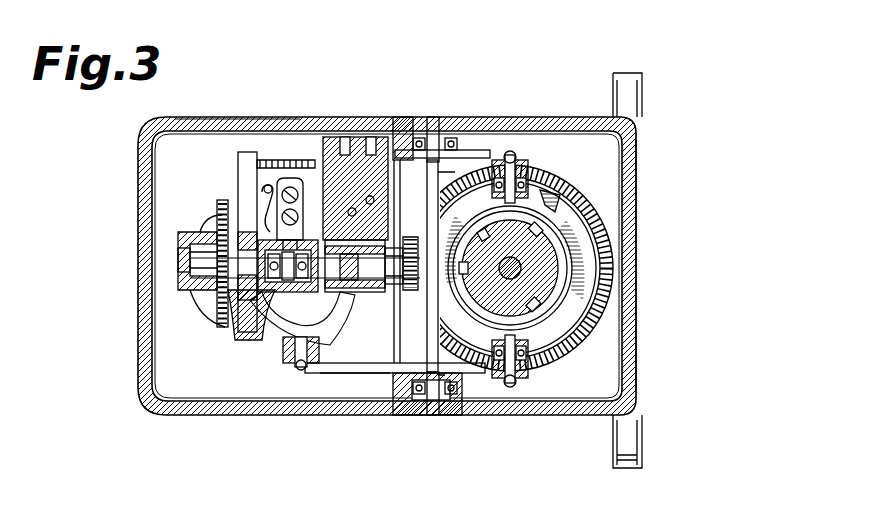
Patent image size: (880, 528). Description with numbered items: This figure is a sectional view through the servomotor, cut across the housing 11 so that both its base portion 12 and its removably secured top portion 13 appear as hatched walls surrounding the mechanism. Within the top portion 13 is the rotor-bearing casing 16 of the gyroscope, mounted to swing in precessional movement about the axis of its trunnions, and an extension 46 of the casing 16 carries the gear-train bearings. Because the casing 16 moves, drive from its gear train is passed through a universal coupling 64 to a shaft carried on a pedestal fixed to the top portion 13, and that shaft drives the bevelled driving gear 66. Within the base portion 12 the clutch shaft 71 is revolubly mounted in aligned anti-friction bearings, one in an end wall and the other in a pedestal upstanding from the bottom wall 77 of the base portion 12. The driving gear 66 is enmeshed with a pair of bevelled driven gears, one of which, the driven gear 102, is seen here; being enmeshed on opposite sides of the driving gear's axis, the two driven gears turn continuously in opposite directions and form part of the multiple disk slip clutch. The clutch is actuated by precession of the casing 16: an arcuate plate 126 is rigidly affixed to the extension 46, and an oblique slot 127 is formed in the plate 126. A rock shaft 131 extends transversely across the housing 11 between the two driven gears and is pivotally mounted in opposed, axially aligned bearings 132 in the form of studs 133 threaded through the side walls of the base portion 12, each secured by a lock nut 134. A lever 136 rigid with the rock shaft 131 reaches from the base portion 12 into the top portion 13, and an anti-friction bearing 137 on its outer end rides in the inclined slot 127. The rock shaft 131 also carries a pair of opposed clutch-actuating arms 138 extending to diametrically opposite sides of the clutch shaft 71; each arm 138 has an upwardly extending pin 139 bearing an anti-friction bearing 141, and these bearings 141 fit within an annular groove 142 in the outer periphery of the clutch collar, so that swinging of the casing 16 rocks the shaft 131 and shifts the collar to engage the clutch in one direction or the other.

The housing 11 is at (272, 117).
The base portion 12 is at (628, 150).
The top portion 13 is at (213, 117).
The rotor-bearing casing 16 is at (205, 328).
The extension 46 is at (228, 342).
The universal coupling 64 is at (305, 284).
The driving gear 66 is at (408, 293).
The clutch shaft 71 is at (522, 258).
The bottom wall 77 is at (630, 218).
The bevelled driven gear 102 is at (560, 205).
The arcuate plate 126 is at (274, 346).
The slot 127 is at (312, 350).
The rock shaft 131 is at (440, 320).
The bearings 132 is at (404, 148).
The studs 133 is at (428, 136).
The lock nut 134 is at (462, 152).
The lever 136 is at (322, 372).
The anti-friction bearing 137 is at (300, 362).
The clutch-actuating arms 138 is at (477, 160).
The pin 139 is at (530, 170).
The anti-friction bearing 141 is at (560, 358).
The annular groove 142 is at (597, 256).